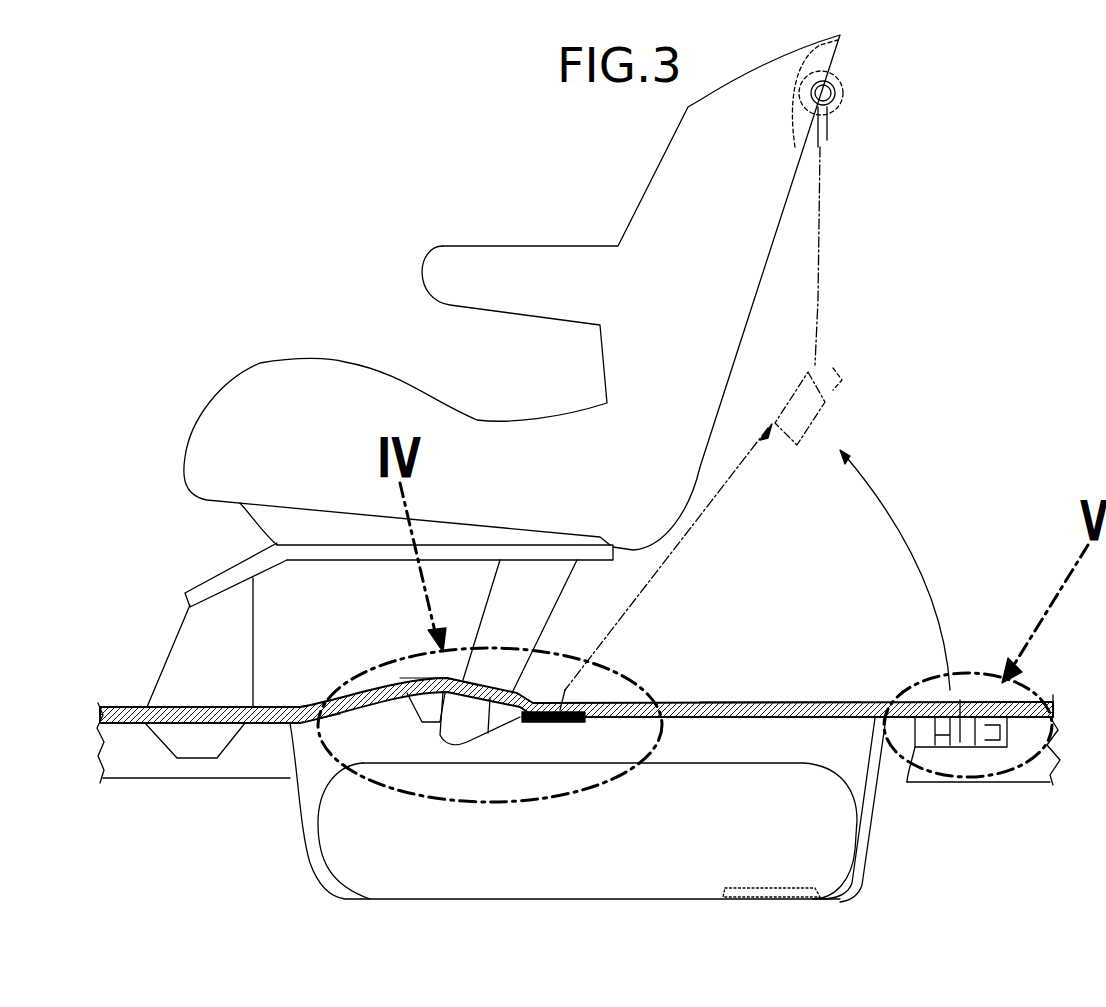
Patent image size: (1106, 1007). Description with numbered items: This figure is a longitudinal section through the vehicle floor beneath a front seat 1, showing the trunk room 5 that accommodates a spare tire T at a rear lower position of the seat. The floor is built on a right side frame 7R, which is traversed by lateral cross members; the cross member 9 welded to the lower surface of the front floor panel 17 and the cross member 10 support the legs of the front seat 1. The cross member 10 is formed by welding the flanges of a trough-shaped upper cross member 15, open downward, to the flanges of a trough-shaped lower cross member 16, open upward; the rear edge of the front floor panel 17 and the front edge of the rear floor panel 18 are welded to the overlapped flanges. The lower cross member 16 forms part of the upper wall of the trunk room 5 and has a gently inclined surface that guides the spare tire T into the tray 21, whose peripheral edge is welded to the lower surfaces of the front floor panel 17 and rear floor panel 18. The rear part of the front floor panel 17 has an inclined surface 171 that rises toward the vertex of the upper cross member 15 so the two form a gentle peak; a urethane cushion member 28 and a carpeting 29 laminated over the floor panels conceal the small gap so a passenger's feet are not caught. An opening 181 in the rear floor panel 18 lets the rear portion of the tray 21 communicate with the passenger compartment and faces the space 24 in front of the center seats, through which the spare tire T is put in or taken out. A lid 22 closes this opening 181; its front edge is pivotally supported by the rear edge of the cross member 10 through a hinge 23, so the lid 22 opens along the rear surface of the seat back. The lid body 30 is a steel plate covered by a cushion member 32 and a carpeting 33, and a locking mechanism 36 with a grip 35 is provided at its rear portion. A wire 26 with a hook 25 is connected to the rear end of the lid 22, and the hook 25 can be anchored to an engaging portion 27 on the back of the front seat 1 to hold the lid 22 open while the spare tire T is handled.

The front seat 1 is at (277, 360).
The trunk room 5 is at (747, 762).
The right side frame 7R is at (258, 770).
The cross member 9 is at (197, 760).
The cross member 10 is at (538, 847).
The upper cross member 15 is at (493, 740).
The lower cross member 16 is at (472, 745).
The front floor panel 17 is at (120, 726).
The inclined surface 171 is at (337, 715).
The rear floor panel 18 is at (1035, 726).
The opening 181 is at (875, 748).
The tray 21 is at (873, 867).
The lid 22 is at (783, 700).
The hinge 23 is at (560, 725).
The space 24 is at (810, 525).
The hook 25 is at (835, 84).
The wire 26 is at (822, 232).
The engaging portion 27 is at (800, 120).
The cushion member 28 is at (377, 687).
The carpeting 29 is at (320, 703).
The lid body 30 is at (677, 715).
The cushion member 32 is at (747, 702).
The carpeting 33 is at (712, 700).
The grip 35 is at (960, 700).
The locking mechanism 36 is at (938, 700).
The spare tire T is at (818, 778).